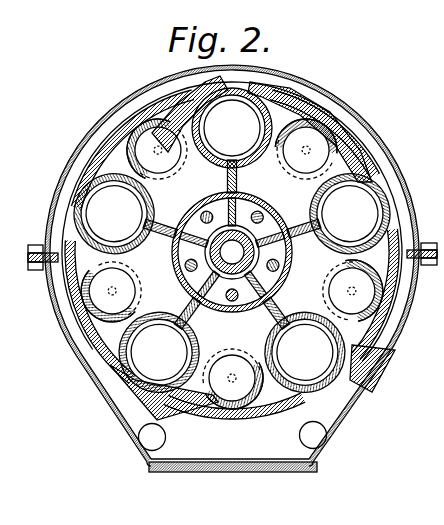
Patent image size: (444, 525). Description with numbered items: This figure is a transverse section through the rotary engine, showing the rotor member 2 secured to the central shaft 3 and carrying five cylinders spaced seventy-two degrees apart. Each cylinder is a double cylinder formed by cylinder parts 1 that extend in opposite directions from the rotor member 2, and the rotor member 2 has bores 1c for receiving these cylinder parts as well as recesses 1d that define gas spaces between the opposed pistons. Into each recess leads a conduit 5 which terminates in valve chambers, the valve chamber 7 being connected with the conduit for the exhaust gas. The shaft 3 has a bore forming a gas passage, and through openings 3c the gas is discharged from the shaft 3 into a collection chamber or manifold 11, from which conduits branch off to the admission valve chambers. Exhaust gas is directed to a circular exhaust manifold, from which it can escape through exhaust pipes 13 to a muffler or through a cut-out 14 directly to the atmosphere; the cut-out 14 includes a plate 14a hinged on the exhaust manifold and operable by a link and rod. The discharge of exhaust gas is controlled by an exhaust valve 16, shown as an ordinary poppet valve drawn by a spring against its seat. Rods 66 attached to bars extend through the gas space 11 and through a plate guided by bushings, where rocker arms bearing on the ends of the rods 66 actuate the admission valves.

The cylinder part 1 is at (406, 290).
The bore 1c is at (232, 248).
The recess 1d is at (72, 180).
The rotor member 2 is at (348, 143).
The shaft 3 is at (175, 256).
The opening 3c is at (285, 232).
The conduit 5 is at (120, 160).
The valve chamber 7 is at (341, 125).
The collection chamber or manifold 11 is at (208, 206).
The exhaust pipe 13 is at (141, 444).
The cut-out 14 is at (290, 473).
The plate 14a is at (222, 473).
The exhaust valve 16 is at (161, 140).
The rod 66 is at (262, 216).